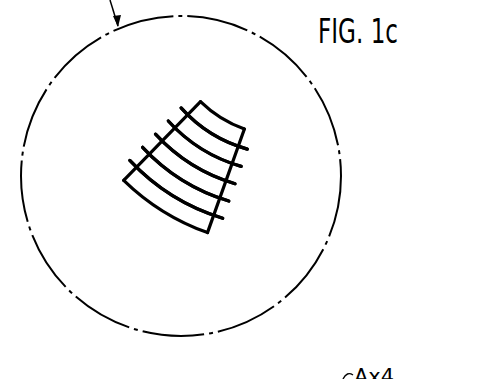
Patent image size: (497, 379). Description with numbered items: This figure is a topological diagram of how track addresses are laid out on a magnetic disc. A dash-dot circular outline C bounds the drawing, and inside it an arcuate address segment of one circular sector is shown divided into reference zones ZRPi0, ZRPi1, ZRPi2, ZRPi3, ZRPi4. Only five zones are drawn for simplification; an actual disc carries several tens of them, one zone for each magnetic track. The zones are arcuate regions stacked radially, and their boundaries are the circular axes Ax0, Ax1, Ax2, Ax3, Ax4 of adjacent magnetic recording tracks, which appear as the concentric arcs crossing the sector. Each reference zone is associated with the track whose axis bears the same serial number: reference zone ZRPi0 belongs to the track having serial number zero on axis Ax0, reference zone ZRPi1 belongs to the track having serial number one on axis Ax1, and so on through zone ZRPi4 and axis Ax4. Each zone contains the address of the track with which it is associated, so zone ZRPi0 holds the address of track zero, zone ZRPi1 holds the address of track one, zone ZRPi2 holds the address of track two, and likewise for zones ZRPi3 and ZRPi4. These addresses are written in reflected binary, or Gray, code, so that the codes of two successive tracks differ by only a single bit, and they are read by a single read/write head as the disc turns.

The circle / reticle field C is at (338, 194).
The reference zone ZRPi0 is at (130, 160).
The reference zone ZRPi1 is at (143, 147).
The reference zone ZRPi2 is at (156, 134).
The reference zone ZRPi3 is at (168, 121).
The reference zone ZRPi4 is at (181, 108).
The circular axis of magnetic recording track Ax0 is at (223, 218).
The circular axis of magnetic recording track Ax1 is at (229, 201).
The circular axis of magnetic recording track Ax2 is at (235, 184).
The circular axis of magnetic recording track Ax3 is at (241, 166).
The circular axis of magnetic recording track Ax4 is at (247, 149).